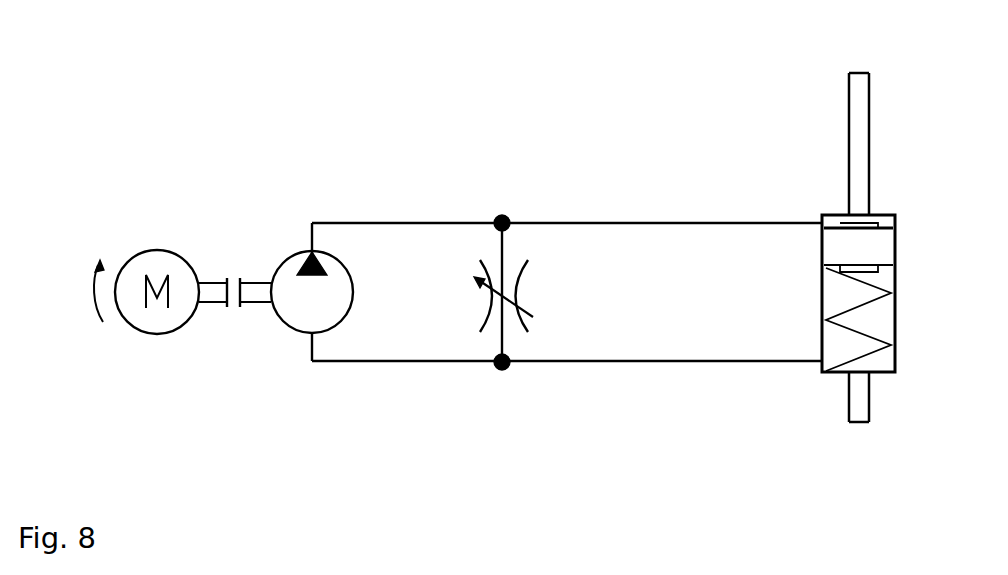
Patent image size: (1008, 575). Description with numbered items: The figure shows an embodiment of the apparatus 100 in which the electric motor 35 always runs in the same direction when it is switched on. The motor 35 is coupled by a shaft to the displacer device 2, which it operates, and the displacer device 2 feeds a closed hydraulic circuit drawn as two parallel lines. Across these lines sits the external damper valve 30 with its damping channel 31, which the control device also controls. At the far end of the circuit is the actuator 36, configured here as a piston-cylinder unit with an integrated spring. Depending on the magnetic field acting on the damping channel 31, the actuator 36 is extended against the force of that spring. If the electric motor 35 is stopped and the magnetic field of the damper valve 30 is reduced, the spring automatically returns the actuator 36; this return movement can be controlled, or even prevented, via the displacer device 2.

The apparatus 100 is at (255, 97).
The electric motor 35 is at (150, 327).
The displacer device 2 is at (285, 327).
The external damper valve 30 is at (474, 368).
The damping channel 31 is at (508, 324).
The actuator 36 is at (838, 373).